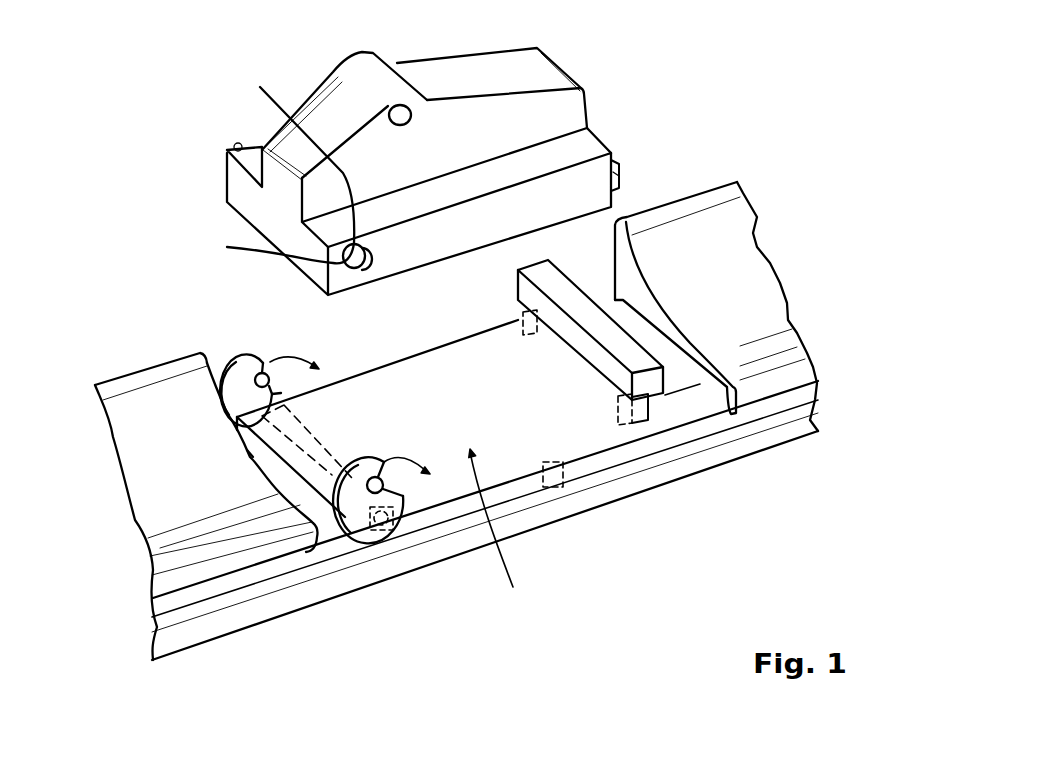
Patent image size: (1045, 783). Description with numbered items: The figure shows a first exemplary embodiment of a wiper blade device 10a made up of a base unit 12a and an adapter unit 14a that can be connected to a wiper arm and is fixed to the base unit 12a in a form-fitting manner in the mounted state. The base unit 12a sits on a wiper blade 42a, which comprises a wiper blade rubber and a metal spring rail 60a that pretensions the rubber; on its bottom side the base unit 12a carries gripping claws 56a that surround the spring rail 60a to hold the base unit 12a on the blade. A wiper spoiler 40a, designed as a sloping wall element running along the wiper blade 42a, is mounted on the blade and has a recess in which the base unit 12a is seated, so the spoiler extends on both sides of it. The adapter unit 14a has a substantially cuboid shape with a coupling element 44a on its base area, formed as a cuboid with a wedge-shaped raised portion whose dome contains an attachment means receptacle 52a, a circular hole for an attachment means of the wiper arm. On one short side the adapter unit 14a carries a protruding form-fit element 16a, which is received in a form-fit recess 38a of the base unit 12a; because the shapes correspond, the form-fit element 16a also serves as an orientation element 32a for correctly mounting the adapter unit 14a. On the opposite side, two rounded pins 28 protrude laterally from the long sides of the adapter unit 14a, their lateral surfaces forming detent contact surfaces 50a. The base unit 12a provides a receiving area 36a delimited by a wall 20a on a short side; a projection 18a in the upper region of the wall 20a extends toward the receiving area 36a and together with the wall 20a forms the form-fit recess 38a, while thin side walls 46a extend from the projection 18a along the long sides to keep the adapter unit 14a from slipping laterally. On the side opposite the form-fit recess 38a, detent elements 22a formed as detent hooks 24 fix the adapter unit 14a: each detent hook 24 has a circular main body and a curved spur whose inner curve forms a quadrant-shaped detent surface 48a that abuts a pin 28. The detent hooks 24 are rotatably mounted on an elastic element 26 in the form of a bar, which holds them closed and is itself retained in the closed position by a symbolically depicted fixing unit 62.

The wiper blade device 10a is at (760, 111).
The base unit 12a is at (585, 455).
The adapter unit 14a is at (628, 82).
The form-fit element 16a is at (617, 162).
The projection 18a is at (573, 333).
The wall 20a is at (662, 395).
The detent element 22a is at (247, 373).
The detent hook 24 is at (360, 522).
The elastic element 26 is at (293, 430).
The rounded pin 28 is at (275, 175).
The orientation element 32a is at (618, 180).
The receiving area 36a is at (505, 532).
The form-fit recess 38a is at (656, 418).
The wiper spoiler 40a is at (173, 403).
The wiper blade 42a is at (773, 435).
The coupling element 44a is at (427, 80).
The side wall 46a is at (520, 315).
The detent surface 48a is at (265, 367).
The detent contact surface 50a is at (236, 144).
The attachment means receptacle 52a is at (399, 105).
The gripping claw 56a is at (557, 487).
The spring rail 60a is at (327, 530).
The fixing unit 62 is at (390, 540).